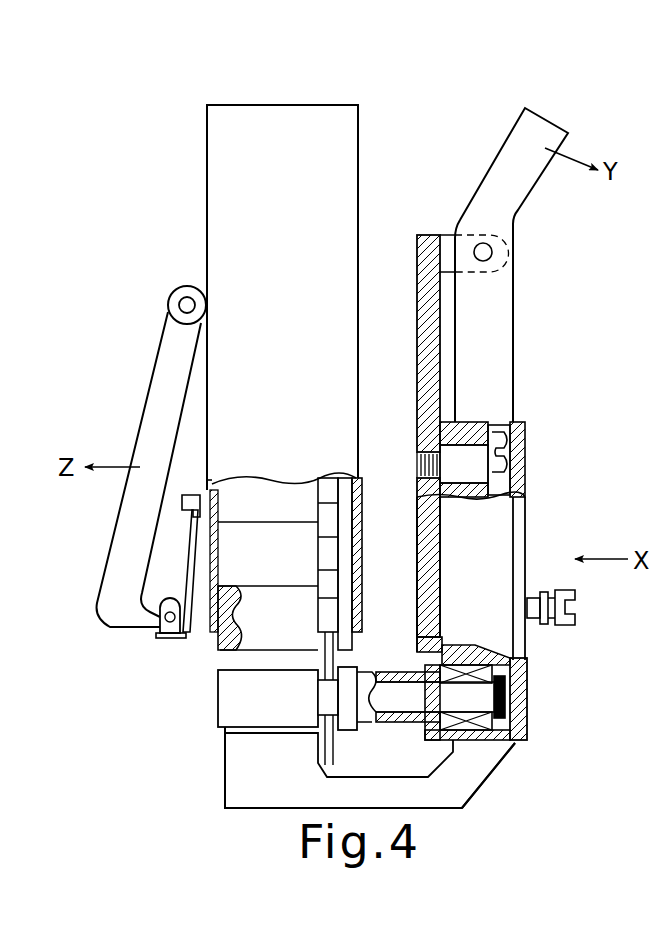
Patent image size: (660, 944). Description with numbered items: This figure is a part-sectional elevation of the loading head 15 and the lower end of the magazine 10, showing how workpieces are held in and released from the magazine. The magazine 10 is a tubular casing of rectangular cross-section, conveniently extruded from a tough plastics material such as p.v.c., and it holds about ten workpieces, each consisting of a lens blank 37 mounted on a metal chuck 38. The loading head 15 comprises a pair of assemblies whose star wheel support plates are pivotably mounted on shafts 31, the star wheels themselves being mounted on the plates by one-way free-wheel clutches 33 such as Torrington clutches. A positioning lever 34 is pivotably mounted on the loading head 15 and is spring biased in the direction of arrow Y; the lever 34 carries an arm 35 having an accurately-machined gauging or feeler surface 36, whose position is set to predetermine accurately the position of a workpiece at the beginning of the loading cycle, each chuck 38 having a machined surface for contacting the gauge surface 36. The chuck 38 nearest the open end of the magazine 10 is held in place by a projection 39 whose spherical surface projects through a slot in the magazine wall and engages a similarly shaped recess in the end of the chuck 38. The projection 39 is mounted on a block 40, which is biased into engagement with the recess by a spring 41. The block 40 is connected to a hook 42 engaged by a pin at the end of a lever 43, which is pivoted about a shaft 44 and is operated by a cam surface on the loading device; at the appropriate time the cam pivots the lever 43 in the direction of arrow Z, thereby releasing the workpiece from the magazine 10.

The magazine 10 is at (215, 175).
The loading head 15 is at (417, 325).
The shaft 31 is at (463, 455).
The one-way clutch 33 is at (527, 728).
The positioning lever 34 is at (500, 290).
The arm 35 is at (450, 790).
The gauging surface 36 is at (247, 732).
The lens blank 37 is at (357, 610).
The chuck 38 is at (232, 713).
The projection 39 is at (212, 618).
The block 40 is at (152, 630).
The spring 41 is at (187, 550).
The hook 42 is at (165, 606).
The lever 43 is at (152, 390).
The shaft 44 is at (176, 298).